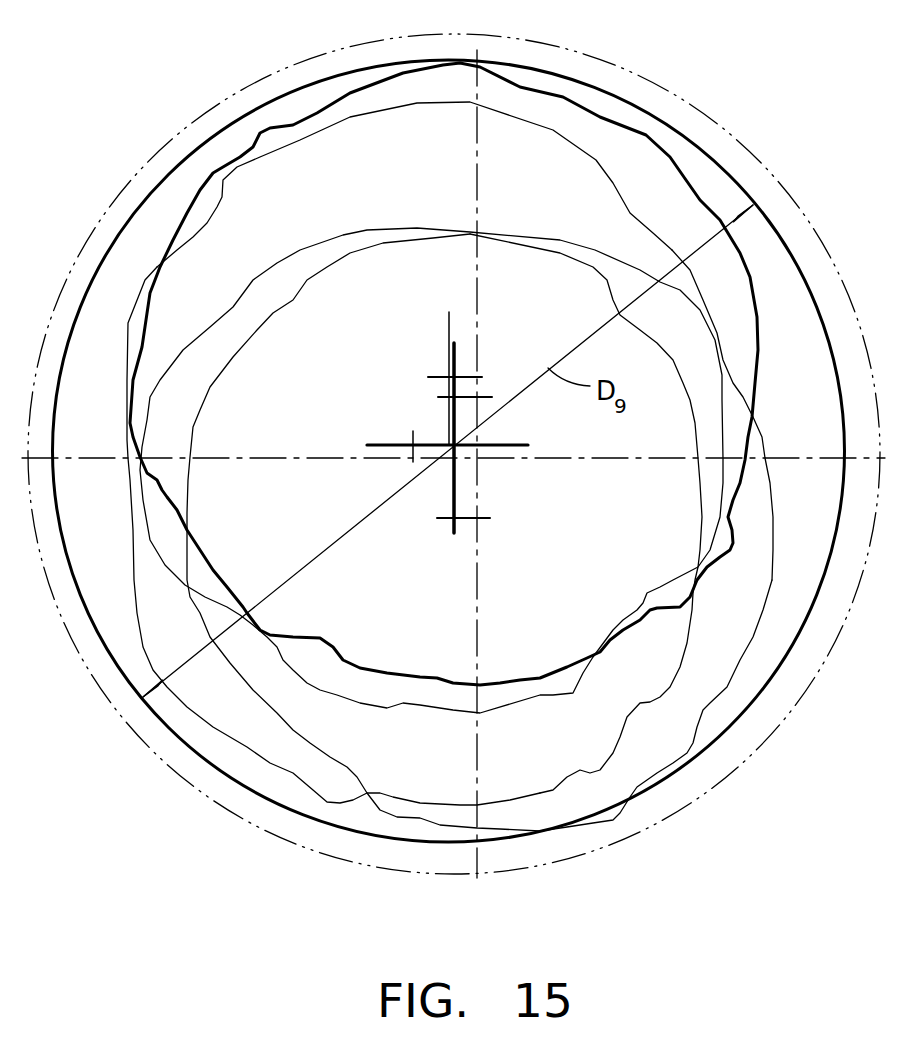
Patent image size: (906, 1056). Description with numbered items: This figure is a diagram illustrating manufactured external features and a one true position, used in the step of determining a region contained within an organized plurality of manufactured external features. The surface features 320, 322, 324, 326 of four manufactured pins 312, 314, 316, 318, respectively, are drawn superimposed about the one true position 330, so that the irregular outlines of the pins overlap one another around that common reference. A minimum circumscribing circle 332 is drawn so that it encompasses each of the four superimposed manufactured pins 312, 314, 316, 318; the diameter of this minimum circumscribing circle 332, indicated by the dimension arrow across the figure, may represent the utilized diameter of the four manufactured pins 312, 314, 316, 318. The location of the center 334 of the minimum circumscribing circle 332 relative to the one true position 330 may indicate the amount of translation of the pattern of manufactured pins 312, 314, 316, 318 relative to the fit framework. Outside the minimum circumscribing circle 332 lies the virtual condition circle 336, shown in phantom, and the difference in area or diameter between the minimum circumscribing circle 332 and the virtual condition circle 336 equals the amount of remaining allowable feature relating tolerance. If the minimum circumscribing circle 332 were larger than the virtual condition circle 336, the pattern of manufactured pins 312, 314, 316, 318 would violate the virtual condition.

The manufactured pin 312 is at (650, 137).
The manufactured pin 314 is at (200, 228).
The manufactured pin 316 is at (761, 620).
The manufactured pin 318 is at (140, 628).
The surface feature 320 is at (672, 160).
The surface feature 322 is at (220, 197).
The surface feature 324 is at (740, 671).
The surface feature 326 is at (147, 647).
The one true position 330 is at (478, 458).
The minimum circumscribing circle 332 is at (571, 78).
The center of the minimum circumscribing circle 334 is at (450, 443).
The virtual condition circle 336 is at (555, 868).